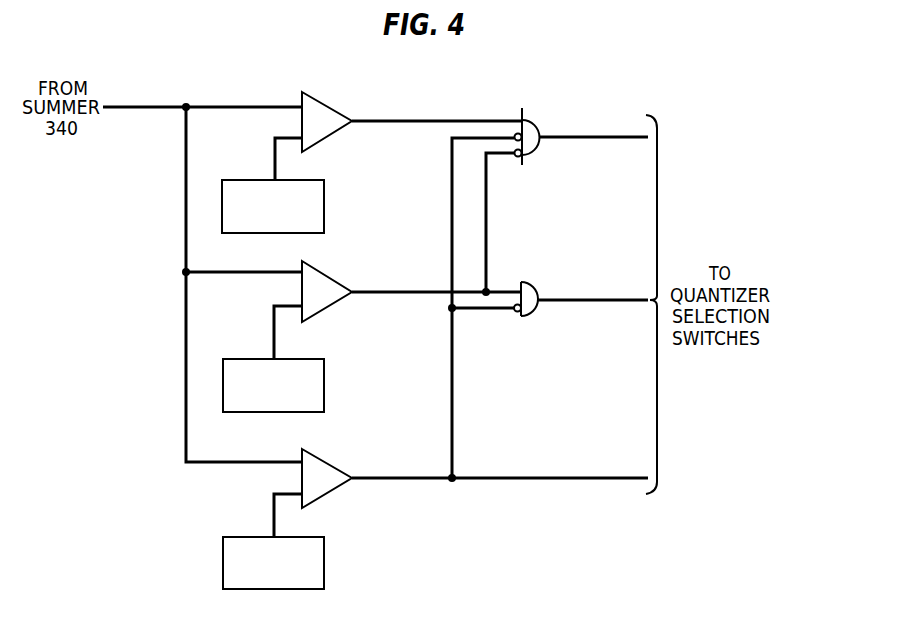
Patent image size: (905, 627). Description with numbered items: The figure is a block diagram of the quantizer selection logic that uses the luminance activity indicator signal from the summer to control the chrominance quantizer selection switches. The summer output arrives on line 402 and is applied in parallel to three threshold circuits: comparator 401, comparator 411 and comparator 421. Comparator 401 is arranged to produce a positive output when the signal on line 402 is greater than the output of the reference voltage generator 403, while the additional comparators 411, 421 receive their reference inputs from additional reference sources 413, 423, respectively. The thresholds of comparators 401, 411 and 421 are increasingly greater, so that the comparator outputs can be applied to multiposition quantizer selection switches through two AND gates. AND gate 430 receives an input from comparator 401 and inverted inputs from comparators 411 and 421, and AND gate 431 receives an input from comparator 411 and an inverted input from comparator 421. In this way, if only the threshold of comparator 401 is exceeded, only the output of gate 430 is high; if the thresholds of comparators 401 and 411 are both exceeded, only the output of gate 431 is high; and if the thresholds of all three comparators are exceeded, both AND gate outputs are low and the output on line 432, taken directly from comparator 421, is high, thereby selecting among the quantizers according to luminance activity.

The comparator 401 is at (328, 106).
The line 402 is at (163, 105).
The reference voltage generator 403 is at (324, 211).
The comparator 411 is at (330, 276).
The reference source 413 is at (324, 387).
The comparator 421 is at (326, 460).
The reference source 423 is at (324, 564).
The AND gate 430 is at (531, 120).
The AND gate 431 is at (531, 282).
The line 432 is at (558, 478).